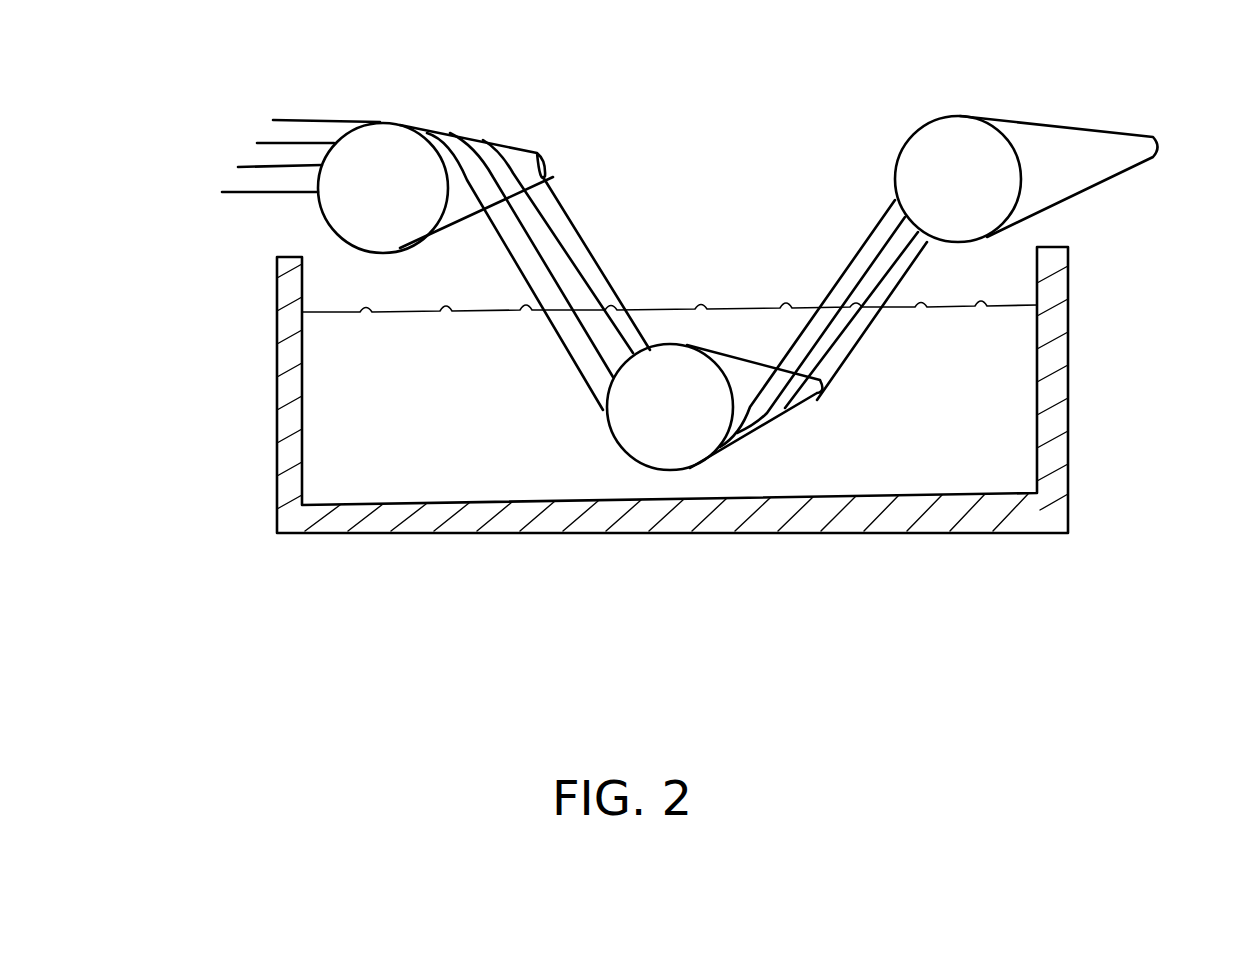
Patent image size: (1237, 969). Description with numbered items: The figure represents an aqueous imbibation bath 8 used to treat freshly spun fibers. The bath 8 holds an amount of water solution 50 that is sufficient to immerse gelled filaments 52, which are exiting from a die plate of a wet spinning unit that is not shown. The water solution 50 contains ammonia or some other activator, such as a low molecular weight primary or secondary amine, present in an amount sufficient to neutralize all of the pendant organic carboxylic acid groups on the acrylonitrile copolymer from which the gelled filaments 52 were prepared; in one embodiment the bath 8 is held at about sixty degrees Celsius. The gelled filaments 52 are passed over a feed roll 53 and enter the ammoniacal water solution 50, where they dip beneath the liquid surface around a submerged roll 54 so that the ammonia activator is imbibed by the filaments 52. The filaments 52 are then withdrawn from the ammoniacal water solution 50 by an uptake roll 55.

The aqueous imbibation bath 8 is at (930, 589).
The water solution 50 is at (1025, 421).
The gelled filaments 52 is at (250, 87).
The feed roll 53 is at (459, 123).
The submerged roller 54 is at (617, 479).
The uptake roll 55 is at (1084, 108).